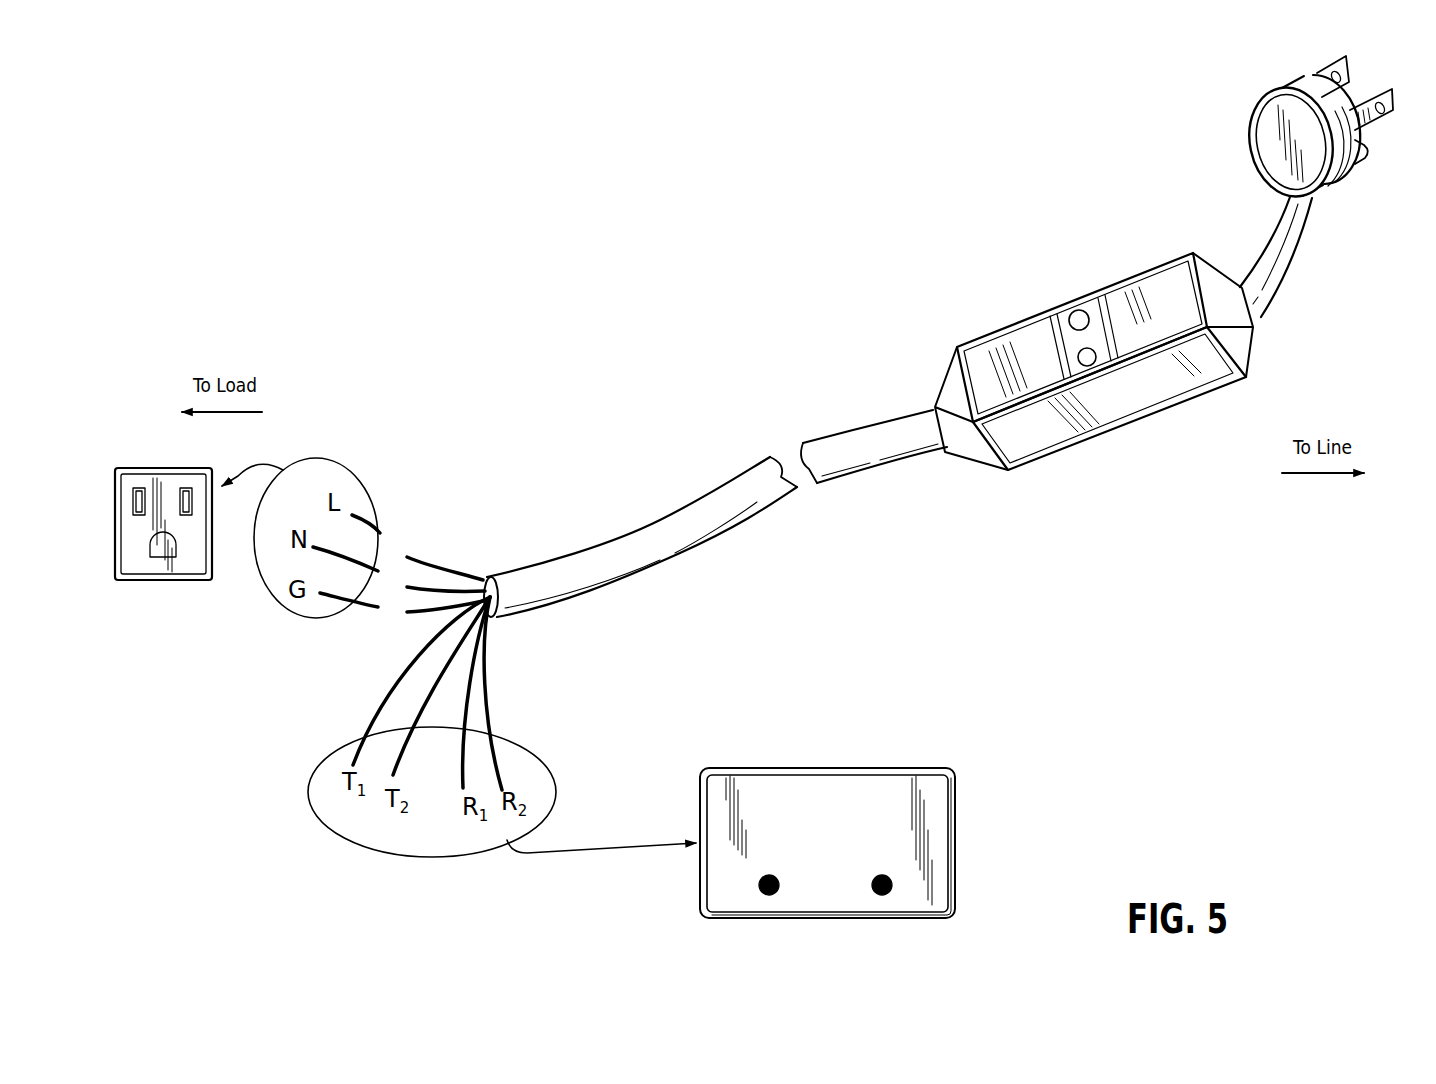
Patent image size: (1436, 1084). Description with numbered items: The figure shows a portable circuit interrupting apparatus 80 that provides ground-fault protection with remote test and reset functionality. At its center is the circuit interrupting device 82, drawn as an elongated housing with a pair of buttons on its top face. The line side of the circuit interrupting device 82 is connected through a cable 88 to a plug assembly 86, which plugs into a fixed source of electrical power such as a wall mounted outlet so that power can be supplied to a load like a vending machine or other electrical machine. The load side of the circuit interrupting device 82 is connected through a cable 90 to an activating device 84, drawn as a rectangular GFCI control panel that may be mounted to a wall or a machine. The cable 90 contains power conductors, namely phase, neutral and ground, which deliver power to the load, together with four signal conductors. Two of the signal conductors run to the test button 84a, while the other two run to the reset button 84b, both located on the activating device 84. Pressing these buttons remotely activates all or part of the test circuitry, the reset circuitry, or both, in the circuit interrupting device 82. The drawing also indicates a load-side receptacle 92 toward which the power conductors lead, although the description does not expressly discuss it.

The portable circuit interrupting apparatus 80 is at (242, 768).
The circuit interrupting device 82 is at (1130, 430).
The activating device 84 is at (864, 862).
The test button 84a is at (769, 895).
The reset button 84b is at (882, 895).
The plug assembly 86 is at (1367, 179).
The cable 88 is at (1292, 268).
The cable 90 is at (823, 426).
The load receptacle 92 is at (143, 468).